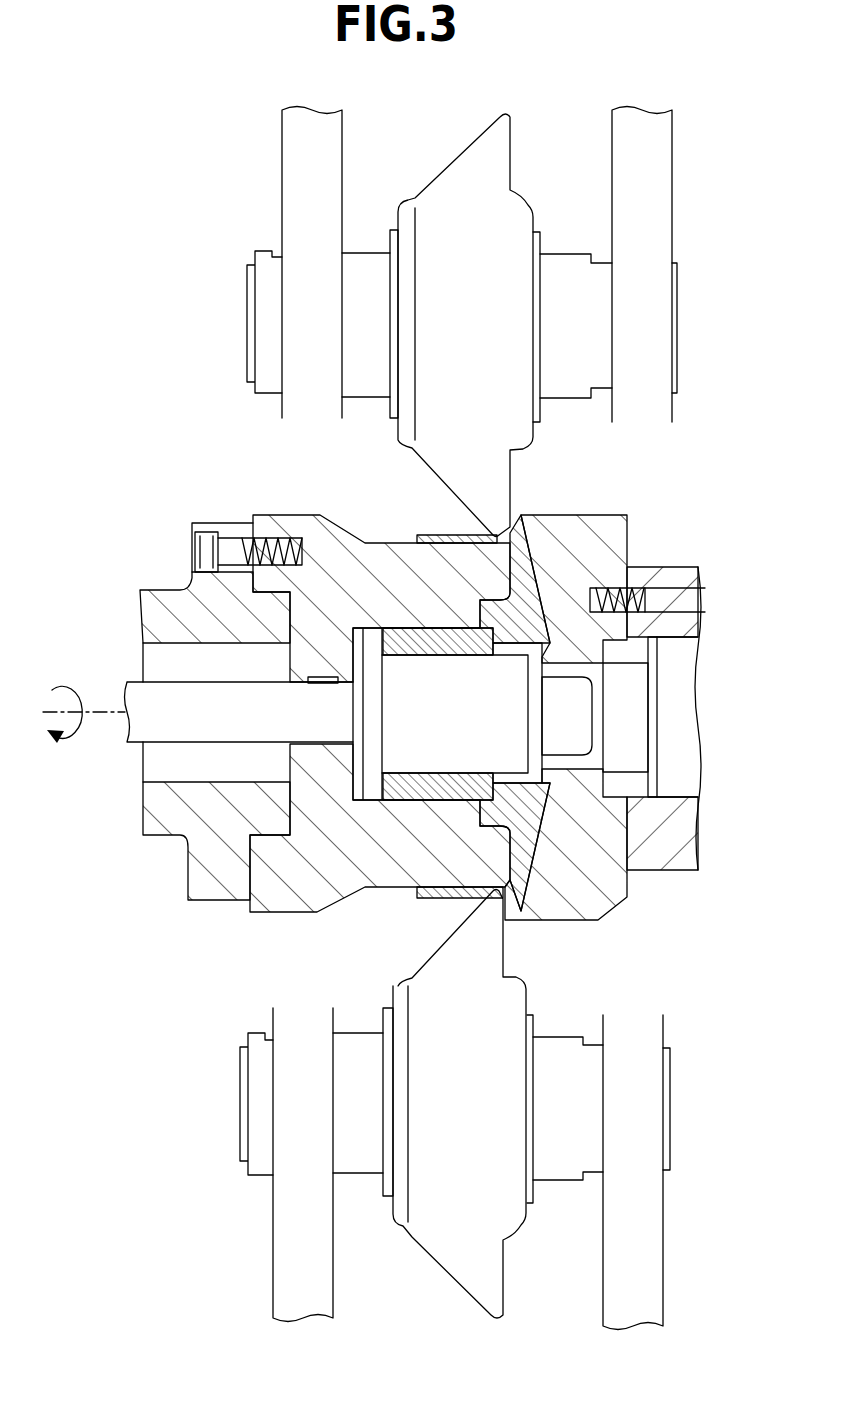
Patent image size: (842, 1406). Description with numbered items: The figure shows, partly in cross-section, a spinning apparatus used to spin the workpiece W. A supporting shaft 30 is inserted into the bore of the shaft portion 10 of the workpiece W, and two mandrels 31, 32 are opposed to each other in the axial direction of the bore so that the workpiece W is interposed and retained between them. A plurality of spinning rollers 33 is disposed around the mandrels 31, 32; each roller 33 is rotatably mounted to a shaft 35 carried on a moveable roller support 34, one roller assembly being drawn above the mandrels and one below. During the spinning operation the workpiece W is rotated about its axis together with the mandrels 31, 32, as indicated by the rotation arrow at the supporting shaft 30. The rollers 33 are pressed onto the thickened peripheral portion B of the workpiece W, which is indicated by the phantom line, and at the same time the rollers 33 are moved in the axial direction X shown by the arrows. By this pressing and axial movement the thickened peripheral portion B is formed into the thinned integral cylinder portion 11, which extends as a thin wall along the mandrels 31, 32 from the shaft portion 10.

The shaft portion 10 is at (403, 787).
The thinned integral cylinder portion 11 is at (418, 532).
The supporting shaft 30 is at (432, 731).
The mandrel 31 is at (270, 897).
The mandrel 32 is at (622, 893).
The spinning roller 33 is at (435, 347).
The moveable roller support 34 is at (292, 186).
The shaft 35 is at (373, 265).
The thickened peripheral portion B is at (493, 515).
The workpiece W is at (540, 567).
The axial direction X is at (400, 483).